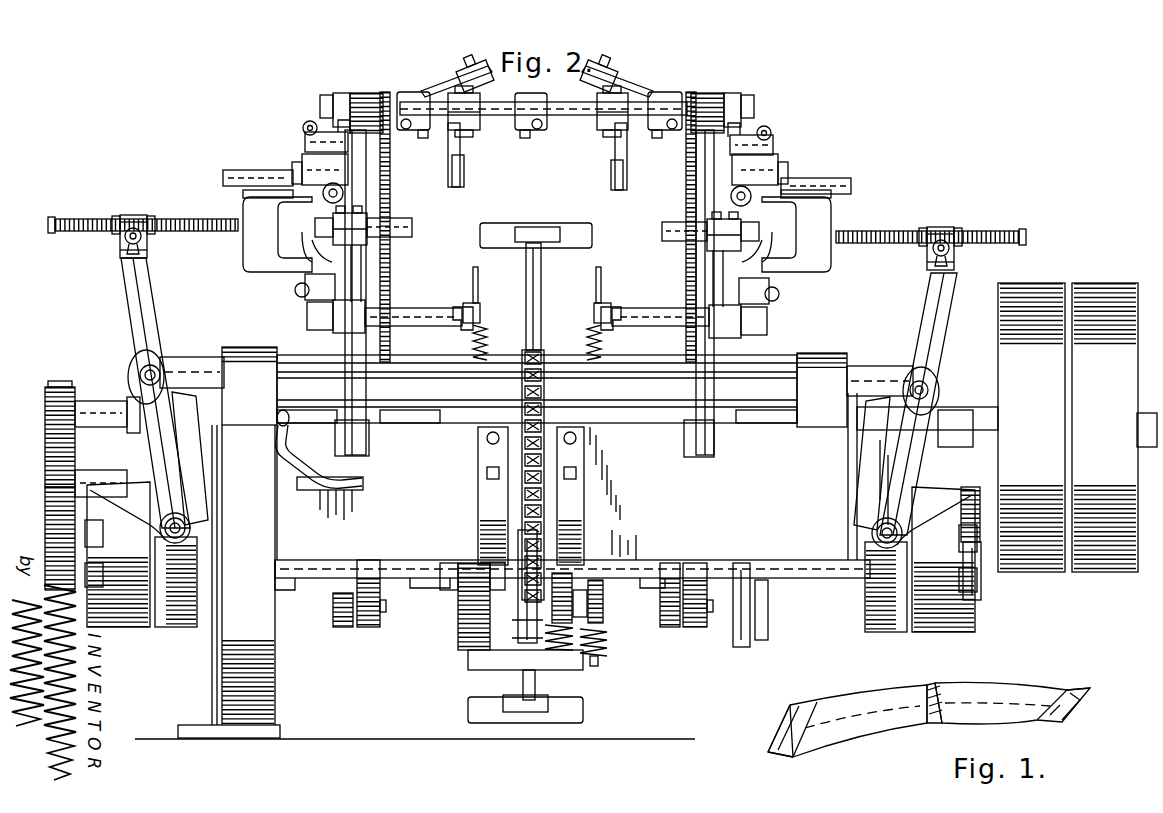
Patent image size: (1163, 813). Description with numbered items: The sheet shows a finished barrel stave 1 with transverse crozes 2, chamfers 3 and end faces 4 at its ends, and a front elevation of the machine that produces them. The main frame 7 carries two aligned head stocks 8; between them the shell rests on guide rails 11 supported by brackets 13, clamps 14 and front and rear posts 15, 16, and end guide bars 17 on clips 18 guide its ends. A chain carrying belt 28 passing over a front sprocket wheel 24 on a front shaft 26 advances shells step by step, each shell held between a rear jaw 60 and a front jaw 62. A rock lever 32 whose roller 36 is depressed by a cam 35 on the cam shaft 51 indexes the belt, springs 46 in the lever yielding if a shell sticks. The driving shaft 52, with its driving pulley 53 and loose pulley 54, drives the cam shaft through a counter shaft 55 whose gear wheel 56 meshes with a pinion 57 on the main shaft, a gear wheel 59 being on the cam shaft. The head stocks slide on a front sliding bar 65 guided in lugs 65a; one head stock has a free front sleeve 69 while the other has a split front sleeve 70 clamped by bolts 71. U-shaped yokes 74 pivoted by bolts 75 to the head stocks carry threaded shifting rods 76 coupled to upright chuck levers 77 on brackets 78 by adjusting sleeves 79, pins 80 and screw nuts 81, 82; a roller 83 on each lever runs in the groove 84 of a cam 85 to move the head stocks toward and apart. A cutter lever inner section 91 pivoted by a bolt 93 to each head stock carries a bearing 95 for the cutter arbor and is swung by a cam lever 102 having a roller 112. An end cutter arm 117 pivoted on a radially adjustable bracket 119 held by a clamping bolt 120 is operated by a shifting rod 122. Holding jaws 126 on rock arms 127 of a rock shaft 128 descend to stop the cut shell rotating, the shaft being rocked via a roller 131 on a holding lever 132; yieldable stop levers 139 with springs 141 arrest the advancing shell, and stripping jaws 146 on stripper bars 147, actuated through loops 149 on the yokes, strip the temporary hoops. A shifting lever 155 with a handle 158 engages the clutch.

In FIG. 1, the barrel stave 1 is at (890, 730).
In FIG. 1, the croze 2 is at (793, 757).
In FIG. 1, the chamfer 3 is at (780, 751).
In FIG. 1, the end face 4 is at (778, 730).
In FIG. 2, the main frame 7 is at (582, 476).
In FIG. 2, the head stock 8 is at (388, 186).
In FIG. 2, the guide rail 11 is at (460, 331).
In FIG. 2, the bracket 13 is at (537, 319).
In FIG. 2, the clamp 14 is at (365, 312).
In FIG. 2, the front post 15 is at (345, 345).
In FIG. 2, the rear post 16 is at (360, 93).
In FIG. 2, the end guide bar 17 is at (404, 232).
In FIG. 2, the clip 18 is at (365, 214).
In FIG. 2, the front sprocket wheel 24 is at (548, 393).
In FIG. 2, the front shaft 26 is at (478, 471).
In FIG. 2, the carrying belt 28 is at (516, 392).
In FIG. 2, the rock lever 32 is at (603, 606).
In FIG. 2, the cam 35 is at (583, 565).
In FIG. 2, the roller 36 is at (552, 605).
In FIG. 2, the spring 46 is at (608, 648).
In FIG. 2, the cam shaft 51 is at (587, 575).
In FIG. 2, the driving shaft 52 is at (108, 420).
In FIG. 2, the driving pulley 53 is at (1114, 427).
In FIG. 2, the loose pulley 54 is at (1031, 427).
In FIG. 2, the counter shaft 55 is at (105, 472).
In FIG. 2, the gear wheel 56 is at (45, 517).
In FIG. 2, the gear pinion 57 is at (48, 390).
In FIG. 2, the gear wheel 59 is at (458, 640).
In FIG. 2, the rear arm 60 is at (503, 230).
In FIG. 2, the front arm 62 is at (538, 230).
In FIG. 2, the front sliding bar 65 is at (872, 370).
In FIG. 2, the front lug 65a is at (245, 362).
In FIG. 2, the front sleeve 69 is at (770, 388).
In FIG. 2, the split front sleeve 70 is at (388, 358).
In FIG. 2, the bolt 71 is at (400, 411).
In FIG. 2, the yoke 74 is at (267, 249).
In FIG. 2, the pivot bolt 75 is at (330, 188).
In FIG. 2, the shifting rod 76 is at (537, 223).
In FIG. 2, the chuck lever 77 is at (143, 313).
In FIG. 2, the bracket 78 is at (128, 374).
In FIG. 2, the adjusting sleeve 79 is at (539, 233).
In FIG. 2, the transverse pin 80 is at (142, 240).
In FIG. 2, the screw nut 81 is at (82, 222).
In FIG. 2, the screw nut 82 is at (152, 222).
In FIG. 2, the roller 83 is at (190, 534).
In FIG. 2, the cam groove 84 is at (183, 575).
In FIG. 2, the cam 85 is at (185, 600).
In FIG. 2, the inner cutter lever section 91 is at (364, 260).
In FIG. 2, the bolt 93 is at (310, 307).
In FIG. 2, the bearing 95 is at (295, 290).
In FIG. 2, the cam lever 102 is at (368, 628).
In FIG. 2, the roller 112 is at (333, 610).
In FIG. 2, the end cutter arm 117 is at (326, 131).
In FIG. 2, the bracket 119 is at (304, 155).
In FIG. 2, the clamping bolt 120 is at (287, 173).
In FIG. 2, the shifting rod 122 is at (303, 127).
In FIG. 2, the holding jaw 126 is at (464, 171).
In FIG. 2, the rock arm 127 is at (448, 150).
In FIG. 2, the rock shaft 128 is at (582, 116).
In FIG. 2, the roller 131 is at (741, 648).
In FIG. 2, the holding lever 132 is at (762, 641).
In FIG. 2, the stop lever 139 is at (473, 283).
In FIG. 2, the spring 141 is at (537, 342).
In FIG. 2, the stripping jaw 146 is at (477, 66).
In FIG. 2, the stripper bar 147 is at (462, 88).
In FIG. 2, the loop 149 is at (243, 195).
In FIG. 2, the shifting lever 155 is at (368, 478).
In FIG. 2, the handle 158 is at (282, 428).